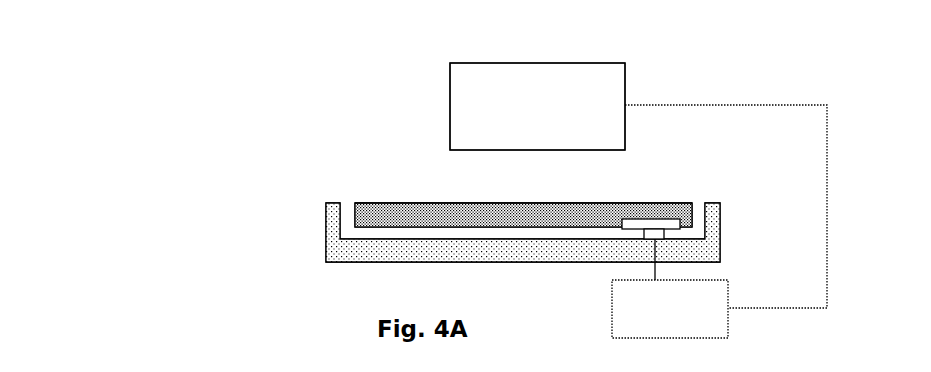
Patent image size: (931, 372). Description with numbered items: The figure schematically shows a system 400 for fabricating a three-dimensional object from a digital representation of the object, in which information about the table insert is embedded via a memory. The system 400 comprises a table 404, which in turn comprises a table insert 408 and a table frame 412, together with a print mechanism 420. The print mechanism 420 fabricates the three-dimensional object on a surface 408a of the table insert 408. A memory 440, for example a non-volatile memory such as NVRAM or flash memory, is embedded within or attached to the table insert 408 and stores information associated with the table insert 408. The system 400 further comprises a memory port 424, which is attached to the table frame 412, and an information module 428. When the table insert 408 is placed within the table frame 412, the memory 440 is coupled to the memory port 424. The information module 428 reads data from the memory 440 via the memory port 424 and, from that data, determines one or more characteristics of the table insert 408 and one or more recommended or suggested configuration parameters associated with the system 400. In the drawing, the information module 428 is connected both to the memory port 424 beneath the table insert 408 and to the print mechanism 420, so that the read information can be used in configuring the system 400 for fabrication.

The system 400 is at (708, 52).
The table 404 is at (132, 253).
The table insert 408 is at (355, 211).
The surface 408a is at (428, 203).
The table frame 412 is at (326, 248).
The print mechanism 420 is at (537, 106).
The memory port 424 is at (638, 232).
The information module 428 is at (670, 309).
The memory 440 is at (663, 219).